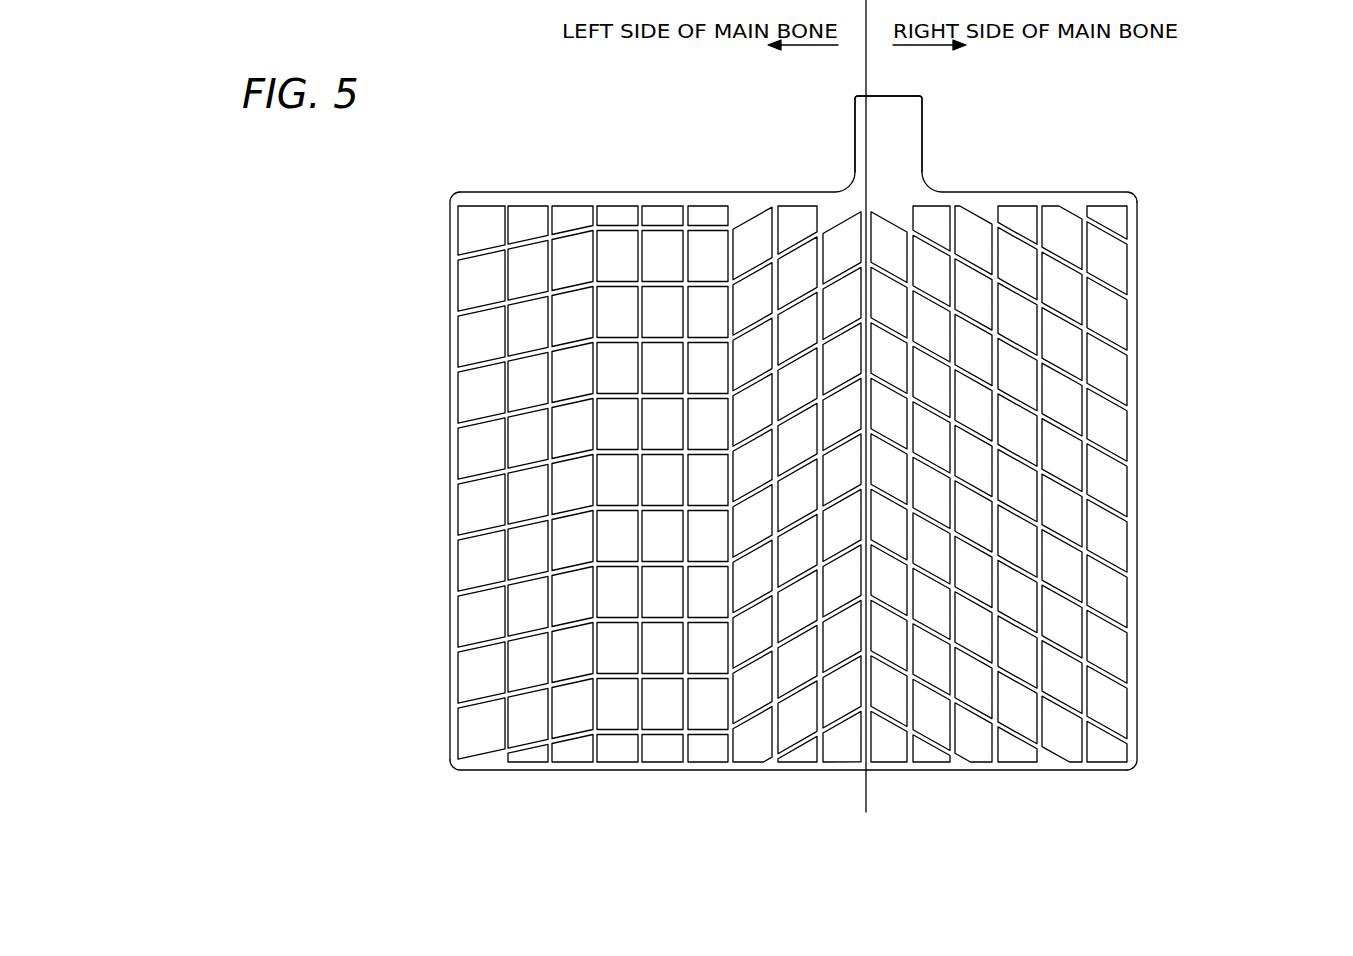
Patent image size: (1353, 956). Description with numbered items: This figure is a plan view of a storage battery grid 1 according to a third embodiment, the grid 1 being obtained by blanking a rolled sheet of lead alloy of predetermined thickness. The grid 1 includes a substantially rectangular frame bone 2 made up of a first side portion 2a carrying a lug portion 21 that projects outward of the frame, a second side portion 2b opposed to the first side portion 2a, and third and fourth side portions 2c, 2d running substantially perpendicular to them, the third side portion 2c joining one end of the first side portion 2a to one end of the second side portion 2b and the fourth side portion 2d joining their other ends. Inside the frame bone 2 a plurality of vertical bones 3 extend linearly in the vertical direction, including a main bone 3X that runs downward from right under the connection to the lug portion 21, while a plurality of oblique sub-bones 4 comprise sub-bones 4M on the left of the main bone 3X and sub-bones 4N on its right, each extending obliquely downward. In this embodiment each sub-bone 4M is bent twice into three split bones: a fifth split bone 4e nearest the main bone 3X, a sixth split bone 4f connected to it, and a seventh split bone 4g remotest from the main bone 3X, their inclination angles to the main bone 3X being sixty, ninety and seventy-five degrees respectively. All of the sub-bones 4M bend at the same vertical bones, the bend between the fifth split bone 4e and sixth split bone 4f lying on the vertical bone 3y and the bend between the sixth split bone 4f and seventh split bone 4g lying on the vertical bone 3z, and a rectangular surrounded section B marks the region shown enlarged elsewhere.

The grid 1 is at (1271, 152).
The frame bone 2 is at (1139, 190).
The first side portion 2a is at (1052, 192).
The second side portion 2b is at (733, 770).
The third side portion 2c is at (450, 452).
The fourth side portion 2d is at (1138, 435).
The lug portion 21 is at (888, 96).
The vertical bone 3 is at (957, 280).
The main bone 3X is at (875, 630).
The vertical bone 3y is at (738, 246).
The vertical bone 3z is at (603, 257).
The sub-bone 4 is at (796, 420).
The sub-bone 4M is at (890, 575).
The sub-bone 4N is at (1116, 344).
The fifth split bone 4e is at (792, 243).
The sixth split bone 4f is at (660, 281).
The seventh split bone 4g is at (526, 243).
The surrounded section B is at (483, 290).